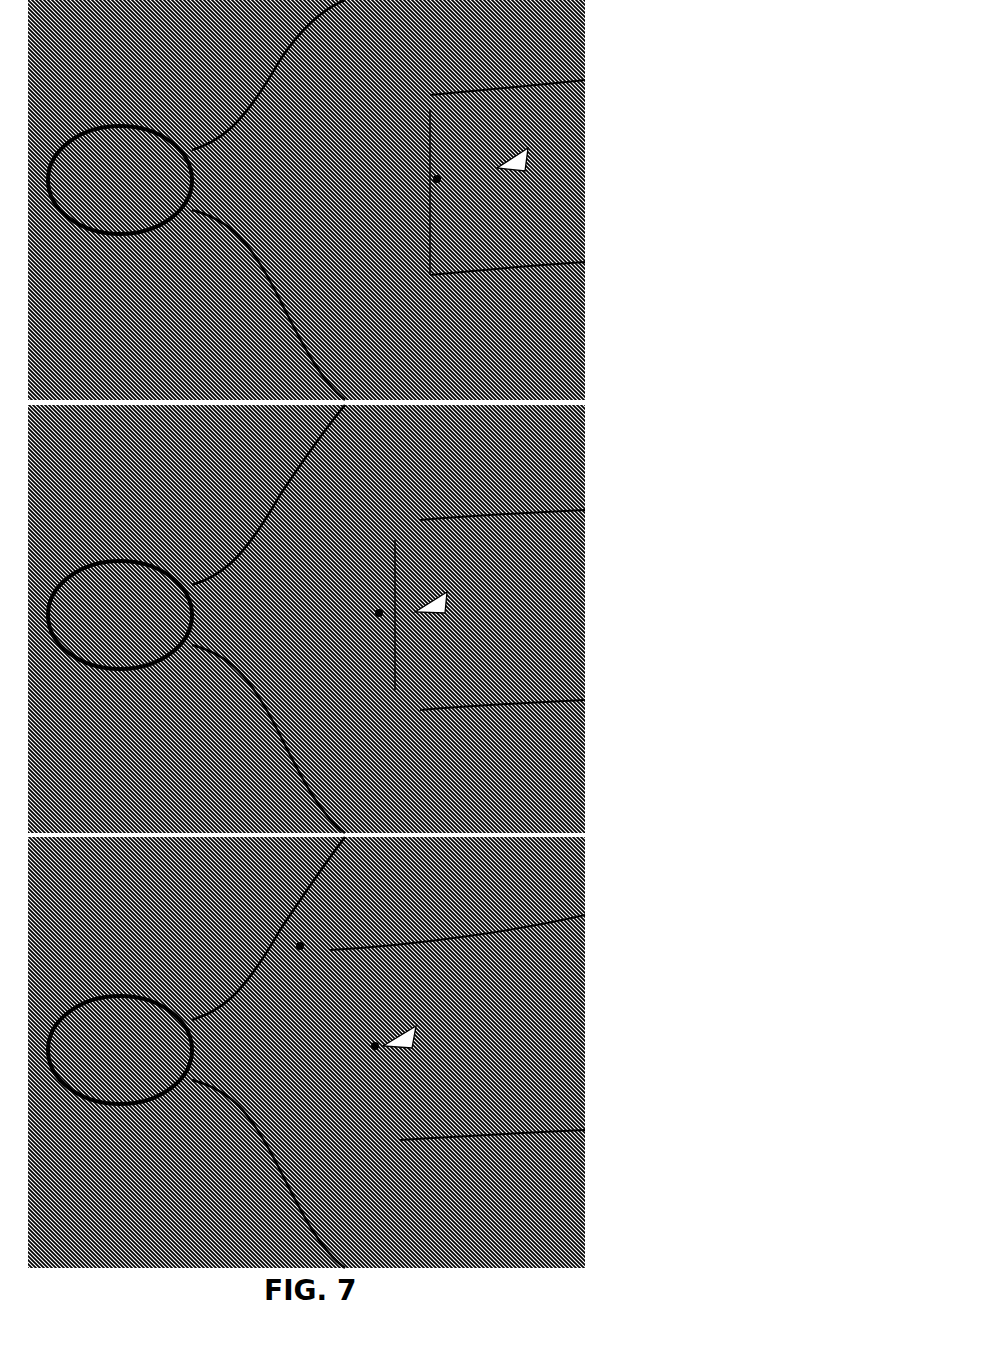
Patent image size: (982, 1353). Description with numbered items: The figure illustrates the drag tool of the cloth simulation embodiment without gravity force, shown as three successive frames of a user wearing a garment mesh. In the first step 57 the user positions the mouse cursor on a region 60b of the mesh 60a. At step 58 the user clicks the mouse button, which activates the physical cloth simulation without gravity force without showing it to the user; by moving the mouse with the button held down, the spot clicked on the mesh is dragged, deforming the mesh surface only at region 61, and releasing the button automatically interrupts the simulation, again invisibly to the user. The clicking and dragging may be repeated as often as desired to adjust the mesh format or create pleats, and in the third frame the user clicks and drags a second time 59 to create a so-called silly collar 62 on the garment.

The first step 57 is at (593, 1048).
The second step 58 is at (593, 608).
The second click and drag 59 is at (591, 176).
The mesh 60a is at (295, 945).
The region of the mesh 60b is at (370, 1045).
The deformed region 61 is at (374, 612).
The silly collar 62 is at (432, 178).